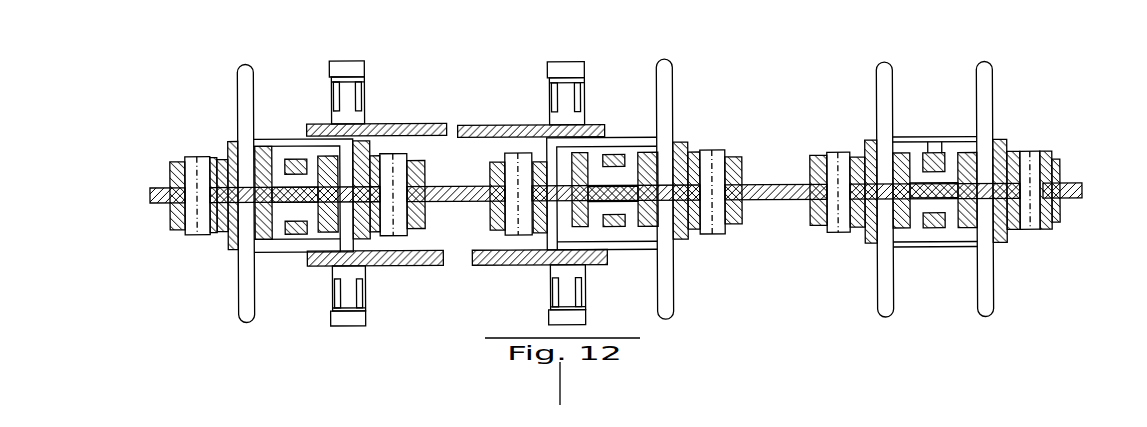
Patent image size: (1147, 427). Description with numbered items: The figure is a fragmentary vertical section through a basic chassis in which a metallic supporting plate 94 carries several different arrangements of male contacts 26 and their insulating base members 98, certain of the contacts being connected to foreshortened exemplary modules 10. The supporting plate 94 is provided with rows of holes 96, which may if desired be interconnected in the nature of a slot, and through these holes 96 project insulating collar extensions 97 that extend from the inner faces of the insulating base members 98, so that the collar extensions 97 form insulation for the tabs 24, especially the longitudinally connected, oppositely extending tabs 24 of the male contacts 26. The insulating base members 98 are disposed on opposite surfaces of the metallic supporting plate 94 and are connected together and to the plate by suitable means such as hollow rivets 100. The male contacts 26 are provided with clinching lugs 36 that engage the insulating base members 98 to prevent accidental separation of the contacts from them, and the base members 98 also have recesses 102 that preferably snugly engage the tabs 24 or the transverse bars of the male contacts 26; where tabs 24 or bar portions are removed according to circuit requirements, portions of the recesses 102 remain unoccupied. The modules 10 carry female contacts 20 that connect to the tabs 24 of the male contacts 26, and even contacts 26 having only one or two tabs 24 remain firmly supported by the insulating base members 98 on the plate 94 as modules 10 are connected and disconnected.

The module 10 is at (477, 125).
The female contact 20 is at (360, 68).
The tab 24 is at (247, 102).
The male contact 26 is at (291, 132).
The clinching lug 36 is at (277, 168).
The metallic supporting plate 94 is at (152, 197).
The hole 96 is at (207, 200).
The insulating collar extension 97 is at (270, 182).
The insulating base member 98 is at (225, 147).
The hollow rivet 100 is at (177, 232).
The recess 102 is at (283, 243).